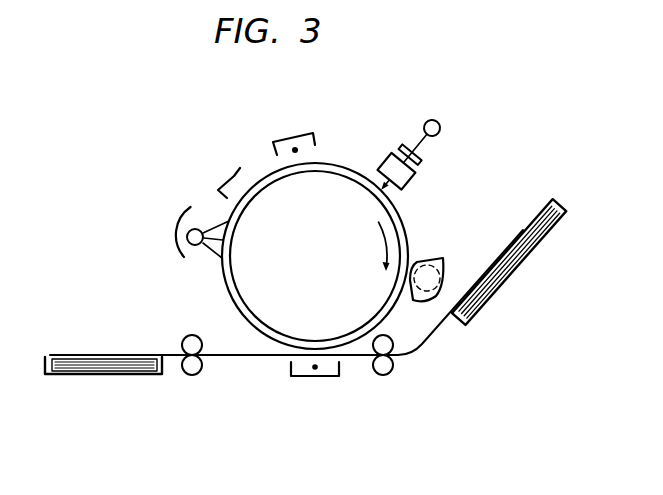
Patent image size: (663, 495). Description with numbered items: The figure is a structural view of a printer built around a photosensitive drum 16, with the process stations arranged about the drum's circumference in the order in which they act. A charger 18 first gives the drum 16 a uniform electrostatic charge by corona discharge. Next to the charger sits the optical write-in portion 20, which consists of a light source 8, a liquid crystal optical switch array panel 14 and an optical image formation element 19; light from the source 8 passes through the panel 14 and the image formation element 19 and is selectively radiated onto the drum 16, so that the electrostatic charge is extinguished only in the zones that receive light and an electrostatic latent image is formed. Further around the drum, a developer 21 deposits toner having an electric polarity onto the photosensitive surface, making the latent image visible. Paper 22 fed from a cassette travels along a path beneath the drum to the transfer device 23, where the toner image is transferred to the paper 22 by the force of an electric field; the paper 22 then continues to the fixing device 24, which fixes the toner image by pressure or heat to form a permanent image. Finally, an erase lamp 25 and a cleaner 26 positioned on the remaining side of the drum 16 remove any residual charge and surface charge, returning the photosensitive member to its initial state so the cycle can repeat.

The light source 8 is at (441, 128).
The liquid crystal optical switch array panel 14 is at (421, 164).
The photosensitive drum 16 is at (342, 187).
The charger 18 is at (292, 133).
The optical image formation element 19 is at (408, 181).
The optical write-in portion 20 is at (503, 100).
The developer 21 is at (443, 258).
The paper 22 is at (433, 331).
The transfer device 23 is at (315, 378).
The fixing device 24 is at (193, 335).
The erase lamp 25 is at (181, 236).
The cleaner 26 is at (224, 183).